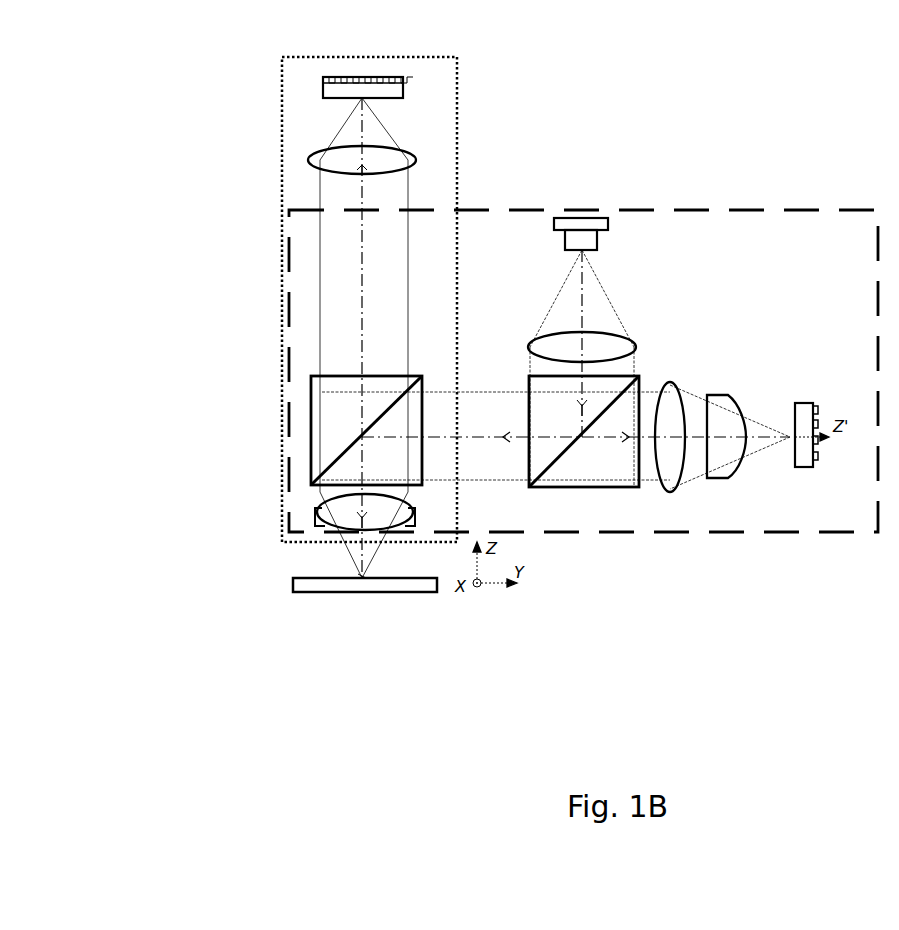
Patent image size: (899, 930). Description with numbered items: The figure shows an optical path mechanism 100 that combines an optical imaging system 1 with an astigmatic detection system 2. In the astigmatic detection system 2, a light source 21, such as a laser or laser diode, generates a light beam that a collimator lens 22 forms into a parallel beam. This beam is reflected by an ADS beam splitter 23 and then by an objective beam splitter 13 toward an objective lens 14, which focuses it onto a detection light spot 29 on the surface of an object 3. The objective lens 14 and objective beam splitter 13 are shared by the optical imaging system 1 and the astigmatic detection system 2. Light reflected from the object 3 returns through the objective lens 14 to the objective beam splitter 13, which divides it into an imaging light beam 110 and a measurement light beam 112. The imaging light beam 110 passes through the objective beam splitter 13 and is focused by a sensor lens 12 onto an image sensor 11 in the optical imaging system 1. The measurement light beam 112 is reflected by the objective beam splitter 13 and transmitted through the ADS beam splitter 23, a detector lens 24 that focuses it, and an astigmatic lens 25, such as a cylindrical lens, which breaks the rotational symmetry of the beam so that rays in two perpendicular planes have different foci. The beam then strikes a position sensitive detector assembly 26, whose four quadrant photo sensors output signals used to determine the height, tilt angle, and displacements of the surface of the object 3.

The optical path mechanism 100 is at (237, 130).
The imaging light beam 110 is at (318, 322).
The measurement light beam 112 is at (500, 480).
The optical imaging system 1 is at (445, 167).
The astigmatic detection system 2 is at (650, 218).
The object 3 is at (400, 586).
The image sensor 11 is at (398, 92).
The sensor lens 12 is at (385, 162).
The objective beam splitter 13 is at (397, 390).
The objective lens 14 is at (408, 515).
The light source 21 is at (555, 228).
The collimator lens 22 is at (540, 343).
The ADS beam splitter 23 is at (537, 377).
The detector lens 24 is at (670, 378).
The astigmatic lens 25 is at (718, 468).
The position sensitive detector assembly 26 is at (800, 467).
The detection light spot 29 is at (362, 577).